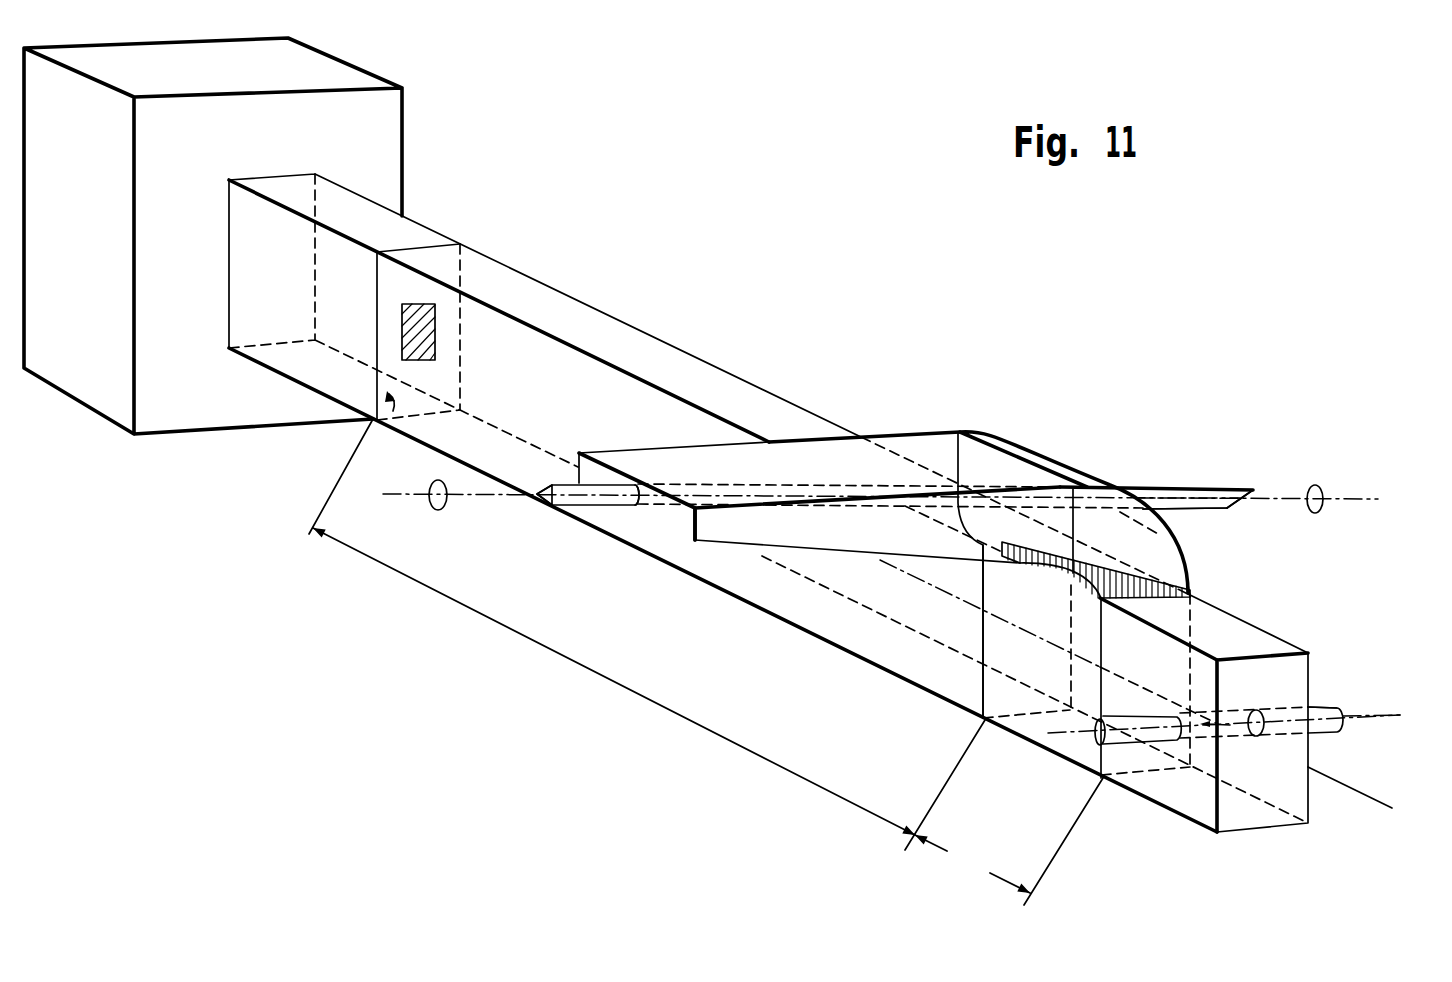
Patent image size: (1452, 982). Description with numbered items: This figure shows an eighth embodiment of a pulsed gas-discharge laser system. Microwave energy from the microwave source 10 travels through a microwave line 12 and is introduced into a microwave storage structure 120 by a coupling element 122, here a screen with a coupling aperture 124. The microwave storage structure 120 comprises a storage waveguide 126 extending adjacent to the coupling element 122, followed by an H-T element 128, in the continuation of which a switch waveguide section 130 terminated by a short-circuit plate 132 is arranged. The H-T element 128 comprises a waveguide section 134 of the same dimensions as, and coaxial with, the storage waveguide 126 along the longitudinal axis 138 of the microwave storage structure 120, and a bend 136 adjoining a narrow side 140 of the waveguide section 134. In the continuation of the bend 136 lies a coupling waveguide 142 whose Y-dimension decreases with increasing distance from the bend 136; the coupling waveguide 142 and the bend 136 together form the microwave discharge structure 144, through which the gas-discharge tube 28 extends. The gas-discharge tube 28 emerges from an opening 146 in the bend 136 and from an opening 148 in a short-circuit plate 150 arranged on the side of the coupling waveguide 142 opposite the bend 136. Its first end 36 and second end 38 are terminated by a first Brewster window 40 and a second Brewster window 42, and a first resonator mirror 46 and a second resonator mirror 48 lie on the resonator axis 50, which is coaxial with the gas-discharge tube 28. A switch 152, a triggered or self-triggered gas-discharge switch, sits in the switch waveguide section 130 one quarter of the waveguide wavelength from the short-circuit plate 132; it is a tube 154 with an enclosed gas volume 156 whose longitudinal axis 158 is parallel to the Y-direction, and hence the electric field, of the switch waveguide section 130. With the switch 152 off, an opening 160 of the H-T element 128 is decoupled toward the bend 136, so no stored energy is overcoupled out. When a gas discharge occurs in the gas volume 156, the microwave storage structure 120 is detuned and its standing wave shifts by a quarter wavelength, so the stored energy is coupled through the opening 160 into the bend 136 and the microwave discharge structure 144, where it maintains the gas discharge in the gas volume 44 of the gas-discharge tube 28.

The microwave source 10 is at (374, 127).
The microwave line 12 is at (371, 222).
The gas-discharge tube 28 is at (1157, 484).
The first end 36 is at (1210, 488).
The second end 38 is at (548, 472).
The first Brewster window 40 is at (1238, 508).
The second Brewster window 42 is at (540, 503).
The gas volume 44 is at (703, 484).
The first resonator mirror 46 is at (1318, 513).
The second resonator mirror 48 is at (435, 510).
The resonator axis 50 is at (1367, 502).
The microwave storage structure 120 is at (827, 612).
The coupling element 122 is at (368, 421).
The coupling aperture 124 is at (437, 349).
The storage waveguide 126 is at (612, 627).
The H-T element 128 is at (1004, 812).
The switch waveguide section 130 is at (1193, 807).
The short-circuit plate 132 is at (1247, 813).
The waveguide section 134 is at (1037, 732).
The bend 136 is at (1095, 528).
The longitudinal axis 138 is at (1372, 797).
The narrow side 140 is at (1060, 587).
The coupling waveguide 142 is at (882, 465).
The microwave discharge structure 144 is at (1052, 458).
The opening 146 is at (1112, 505).
The opening 148 is at (640, 507).
The short-circuit plate 150 is at (670, 513).
The switch 152 is at (1345, 727).
The tube 154 is at (1323, 700).
The gas volume 156 is at (1322, 743).
The longitudinal axis 158 is at (1382, 707).
The opening 160 is at (1196, 582).